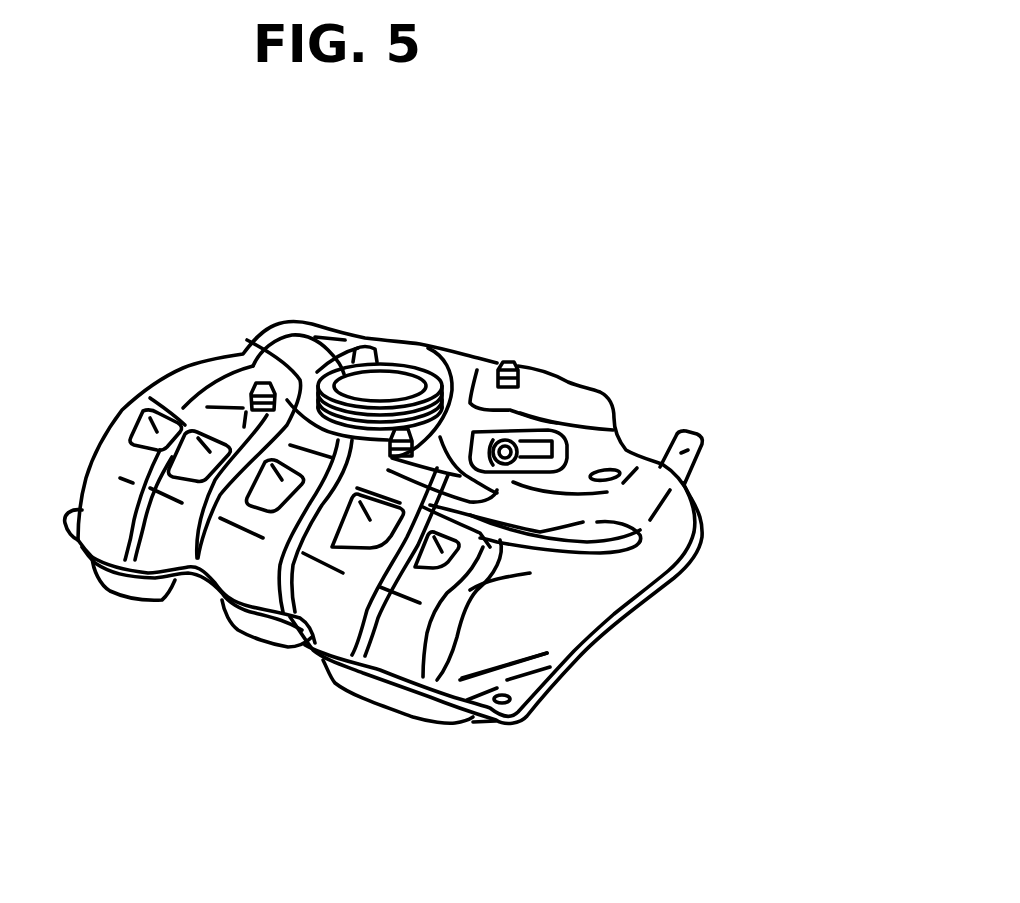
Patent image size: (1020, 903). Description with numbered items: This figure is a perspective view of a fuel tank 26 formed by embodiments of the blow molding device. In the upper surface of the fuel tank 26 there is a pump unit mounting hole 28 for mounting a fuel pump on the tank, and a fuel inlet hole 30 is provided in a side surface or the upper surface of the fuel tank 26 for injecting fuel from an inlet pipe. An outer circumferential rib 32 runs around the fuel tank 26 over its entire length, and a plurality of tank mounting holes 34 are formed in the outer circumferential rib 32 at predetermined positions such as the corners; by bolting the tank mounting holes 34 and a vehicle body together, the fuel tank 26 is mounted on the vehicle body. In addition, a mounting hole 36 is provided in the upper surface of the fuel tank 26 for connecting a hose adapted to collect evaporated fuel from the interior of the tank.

The fuel tank 26 is at (470, 524).
The pump unit mounting hole 28 is at (315, 378).
The fuel inlet hole 30 is at (684, 452).
The outer circumferential rib 32 is at (500, 714).
The tank mounting holes 34 is at (530, 677).
The mounting hole 36 is at (545, 440).